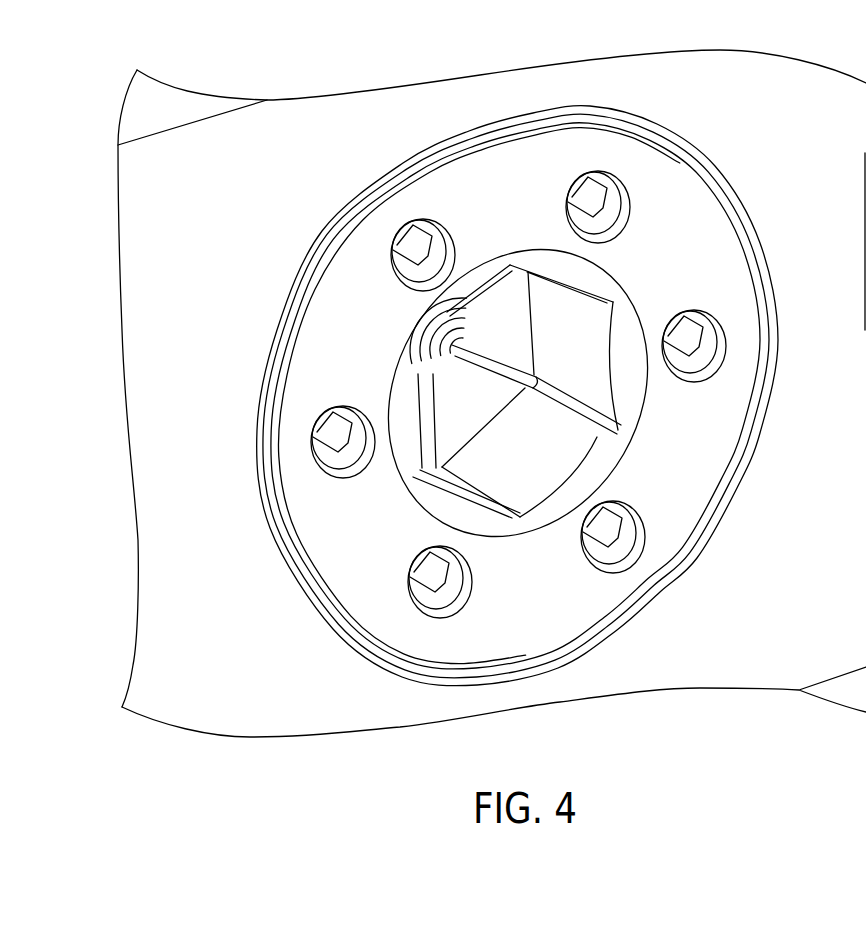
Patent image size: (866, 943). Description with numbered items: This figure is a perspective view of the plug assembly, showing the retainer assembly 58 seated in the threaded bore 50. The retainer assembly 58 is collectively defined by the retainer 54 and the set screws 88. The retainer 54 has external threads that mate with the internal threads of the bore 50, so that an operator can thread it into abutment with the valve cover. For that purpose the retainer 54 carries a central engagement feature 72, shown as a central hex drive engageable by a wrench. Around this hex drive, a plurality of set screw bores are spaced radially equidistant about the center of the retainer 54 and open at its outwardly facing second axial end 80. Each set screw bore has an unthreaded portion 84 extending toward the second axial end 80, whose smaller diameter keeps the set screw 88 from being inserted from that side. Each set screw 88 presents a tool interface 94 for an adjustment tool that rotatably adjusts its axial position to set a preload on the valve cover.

The bore 50 is at (763, 243).
The retainer 54 is at (682, 193).
The retainer assembly 58 is at (359, 118).
The central engagement feature 72 is at (577, 435).
The second axial end 80 is at (735, 288).
The unthreaded portion 84 is at (717, 358).
The set screw 88 is at (623, 540).
The tool interface 94 is at (430, 585).